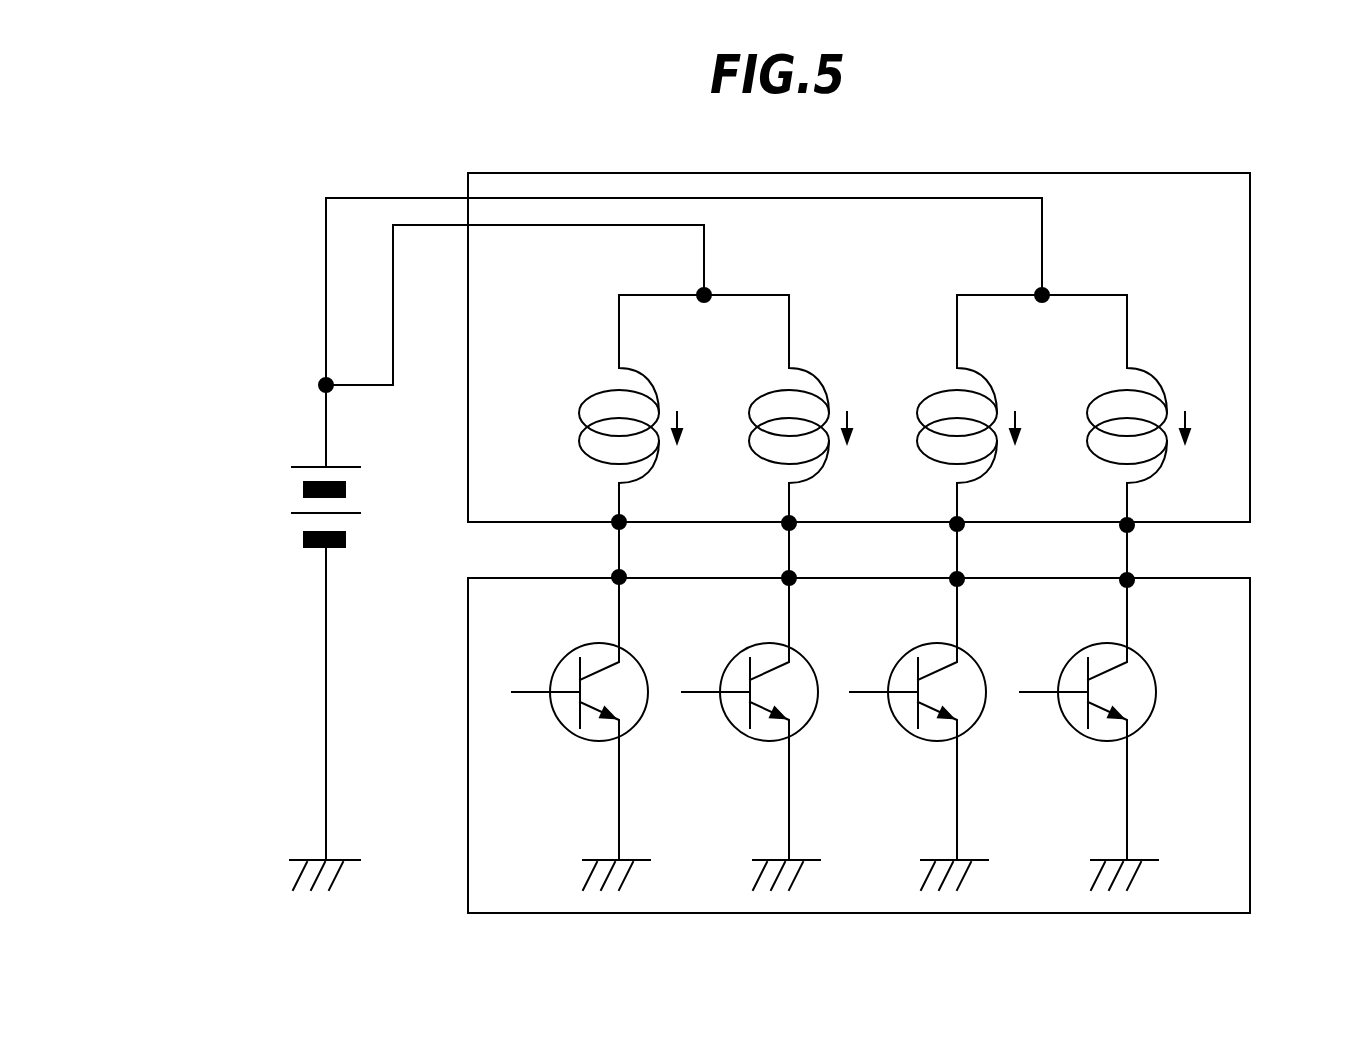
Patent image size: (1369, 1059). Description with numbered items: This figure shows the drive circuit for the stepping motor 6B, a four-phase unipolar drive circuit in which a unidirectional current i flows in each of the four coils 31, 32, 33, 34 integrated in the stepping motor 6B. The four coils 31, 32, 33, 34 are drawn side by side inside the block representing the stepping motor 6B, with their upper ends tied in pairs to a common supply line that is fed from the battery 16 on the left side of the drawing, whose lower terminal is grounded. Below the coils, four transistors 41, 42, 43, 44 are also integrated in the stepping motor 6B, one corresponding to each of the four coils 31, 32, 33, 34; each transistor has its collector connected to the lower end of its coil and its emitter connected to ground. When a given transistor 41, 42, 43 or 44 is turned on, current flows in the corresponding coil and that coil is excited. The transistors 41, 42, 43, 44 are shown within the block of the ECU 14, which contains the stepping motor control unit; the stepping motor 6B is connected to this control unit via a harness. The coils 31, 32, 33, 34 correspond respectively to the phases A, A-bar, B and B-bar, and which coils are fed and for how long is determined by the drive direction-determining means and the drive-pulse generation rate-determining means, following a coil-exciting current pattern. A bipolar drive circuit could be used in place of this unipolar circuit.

The battery 16 is at (282, 487).
The stepping motor 6B is at (1250, 360).
The ECU 14 is at (1250, 735).
The coil 31 is at (589, 398).
The coil 32 is at (759, 398).
The coil 33 is at (927, 398).
The coil 34 is at (1097, 398).
The transistor 41 is at (583, 742).
The transistor 42 is at (753, 742).
The transistor 43 is at (921, 742).
The transistor 44 is at (1091, 742).